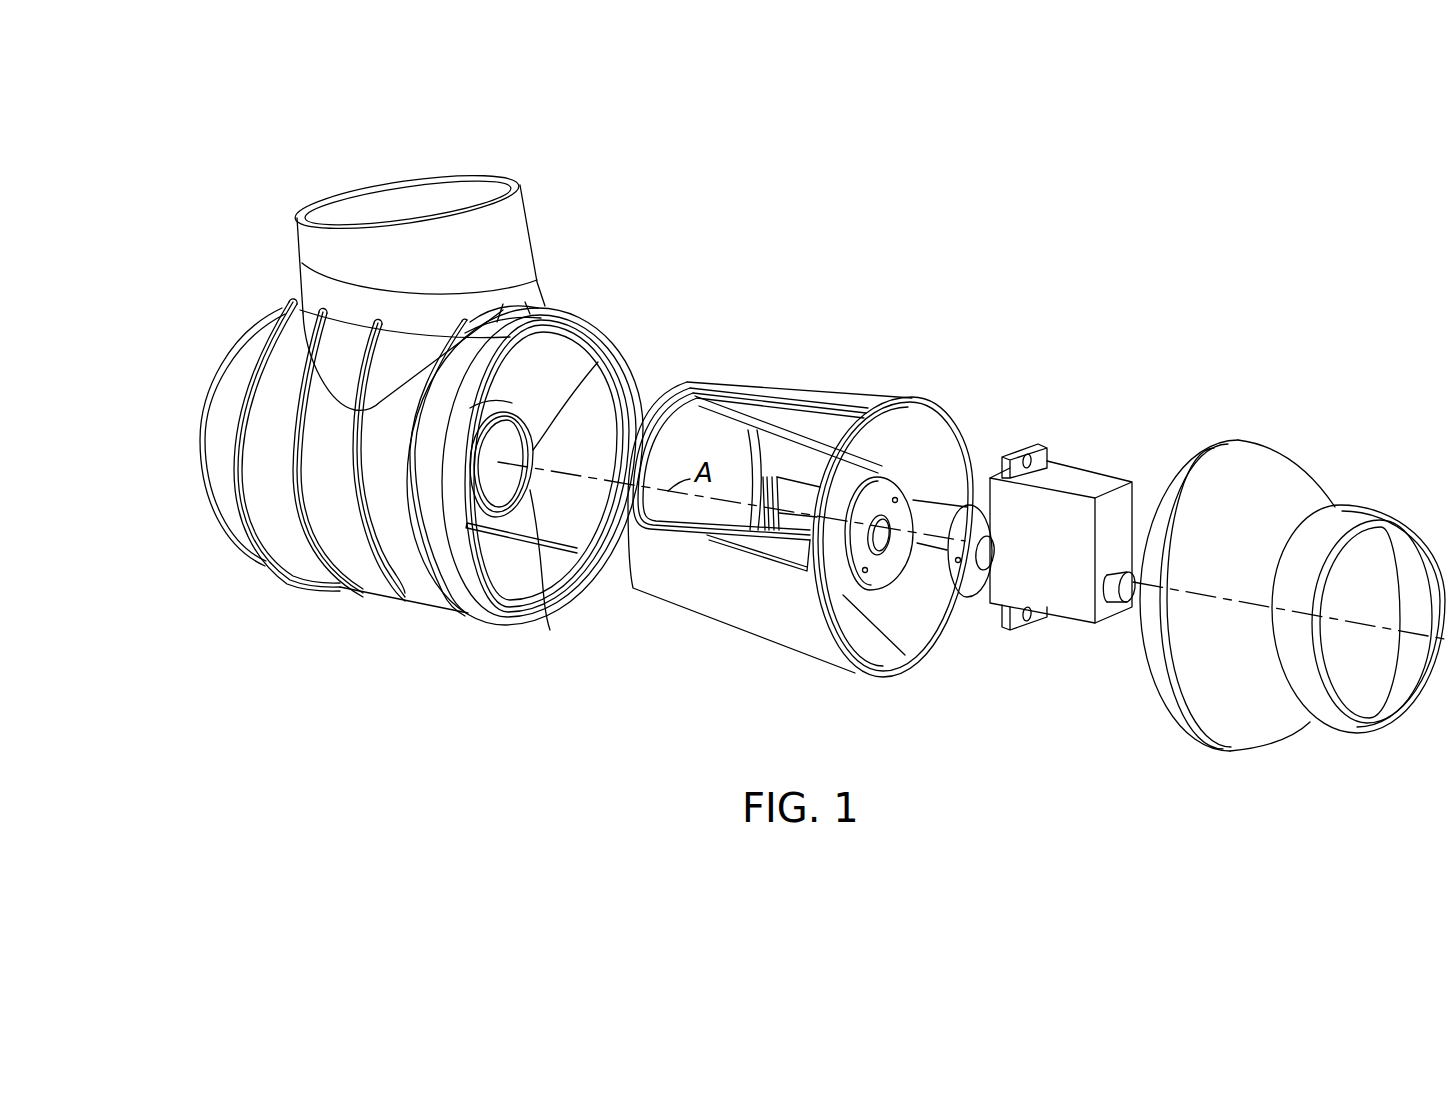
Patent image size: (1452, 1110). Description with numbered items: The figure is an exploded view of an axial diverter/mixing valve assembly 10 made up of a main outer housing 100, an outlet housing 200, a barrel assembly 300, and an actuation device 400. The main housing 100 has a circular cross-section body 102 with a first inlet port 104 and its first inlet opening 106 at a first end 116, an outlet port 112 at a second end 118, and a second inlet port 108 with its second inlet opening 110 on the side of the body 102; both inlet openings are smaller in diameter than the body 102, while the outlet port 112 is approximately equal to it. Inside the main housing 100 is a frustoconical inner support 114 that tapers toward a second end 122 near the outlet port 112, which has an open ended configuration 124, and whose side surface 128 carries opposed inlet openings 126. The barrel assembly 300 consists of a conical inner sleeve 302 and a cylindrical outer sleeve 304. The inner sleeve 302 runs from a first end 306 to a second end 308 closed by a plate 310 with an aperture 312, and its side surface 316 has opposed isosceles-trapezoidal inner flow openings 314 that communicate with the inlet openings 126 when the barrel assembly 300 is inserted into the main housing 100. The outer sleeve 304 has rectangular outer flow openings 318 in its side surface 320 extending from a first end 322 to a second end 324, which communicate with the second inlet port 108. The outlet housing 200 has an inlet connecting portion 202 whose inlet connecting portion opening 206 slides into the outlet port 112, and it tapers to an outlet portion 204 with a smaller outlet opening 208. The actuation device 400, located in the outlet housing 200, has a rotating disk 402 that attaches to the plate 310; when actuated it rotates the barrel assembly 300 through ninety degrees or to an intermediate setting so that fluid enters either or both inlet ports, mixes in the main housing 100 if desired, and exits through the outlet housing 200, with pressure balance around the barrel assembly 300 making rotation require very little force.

The valve assembly 10 is at (240, 146).
The main outer housing 100 is at (385, 594).
The body 102 is at (327, 520).
The first inlet port 104 is at (257, 337).
The first inlet opening 106 is at (185, 427).
The second inlet port 108 is at (317, 250).
The second inlet opening 110 is at (420, 183).
The outlet port 112 is at (512, 618).
The inner sleeve/support 114 is at (505, 535).
The first end 116 is at (238, 487).
The second end 118 is at (545, 310).
The second (apex) end 122 is at (592, 378).
The open ended configuration 124 is at (600, 388).
The inlet openings 126 is at (508, 468).
The side surface 128 is at (483, 397).
The outlet housing 200 is at (1330, 480).
The inlet connecting portion 202 is at (1277, 460).
The outlet portion 204 is at (1363, 515).
The inlet connecting portion opening 206 is at (1135, 676).
The outlet opening 208 is at (1375, 730).
The barrel assembly 300 is at (905, 330).
The inner sleeve 302 is at (843, 595).
The outer sleeve 304 is at (810, 650).
The first end 306 is at (697, 397).
The second end 308 is at (938, 628).
The plate 310 is at (878, 495).
The aperture 312 is at (902, 520).
The inner flow openings 314 is at (708, 535).
The side surface 316 is at (887, 392).
The outer flow openings 318 is at (803, 395).
The side surface 320 is at (805, 393).
The first (base) end 322 is at (640, 593).
The second end 324 is at (948, 622).
The actuation device 400 is at (1095, 487).
The rotating disk 402 is at (970, 540).